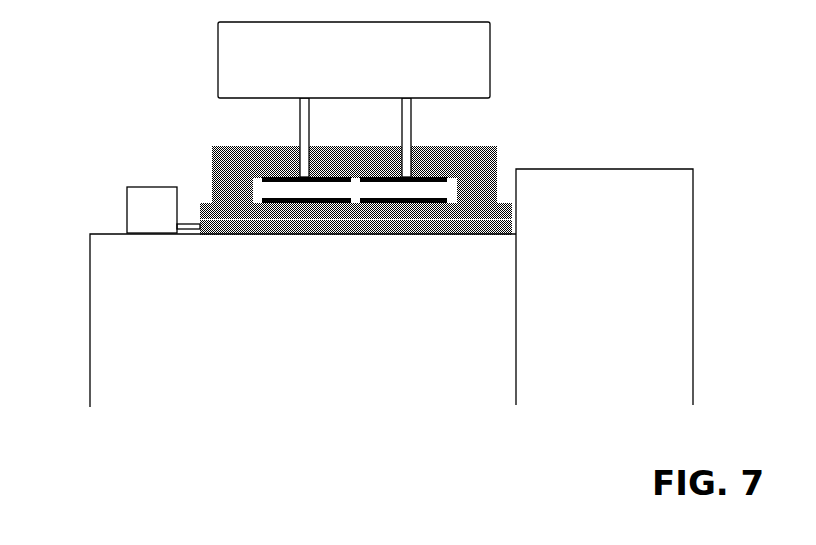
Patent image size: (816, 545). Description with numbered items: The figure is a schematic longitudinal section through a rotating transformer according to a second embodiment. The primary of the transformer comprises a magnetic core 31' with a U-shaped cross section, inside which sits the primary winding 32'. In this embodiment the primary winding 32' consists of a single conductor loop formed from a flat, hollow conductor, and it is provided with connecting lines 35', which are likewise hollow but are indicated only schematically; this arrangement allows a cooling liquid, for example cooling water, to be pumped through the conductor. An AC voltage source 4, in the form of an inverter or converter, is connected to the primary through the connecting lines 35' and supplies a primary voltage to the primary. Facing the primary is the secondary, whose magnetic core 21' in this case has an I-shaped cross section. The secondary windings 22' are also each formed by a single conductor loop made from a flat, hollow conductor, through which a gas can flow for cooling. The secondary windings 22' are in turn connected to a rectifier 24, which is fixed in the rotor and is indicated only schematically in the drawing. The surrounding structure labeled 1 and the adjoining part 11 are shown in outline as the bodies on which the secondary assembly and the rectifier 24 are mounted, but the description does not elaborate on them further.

The base 1 is at (329, 356).
The block / housing portion 11 is at (604, 287).
The magnetic core of the secondary 21' is at (356, 244).
The secondary windings 22' is at (356, 252).
The magnetic core 31' is at (381, 144).
The primary winding 32' is at (308, 158).
The connecting lines 35' is at (327, 136).
The AC voltage source 4 is at (357, 79).
The rectifier 24 is at (156, 184).